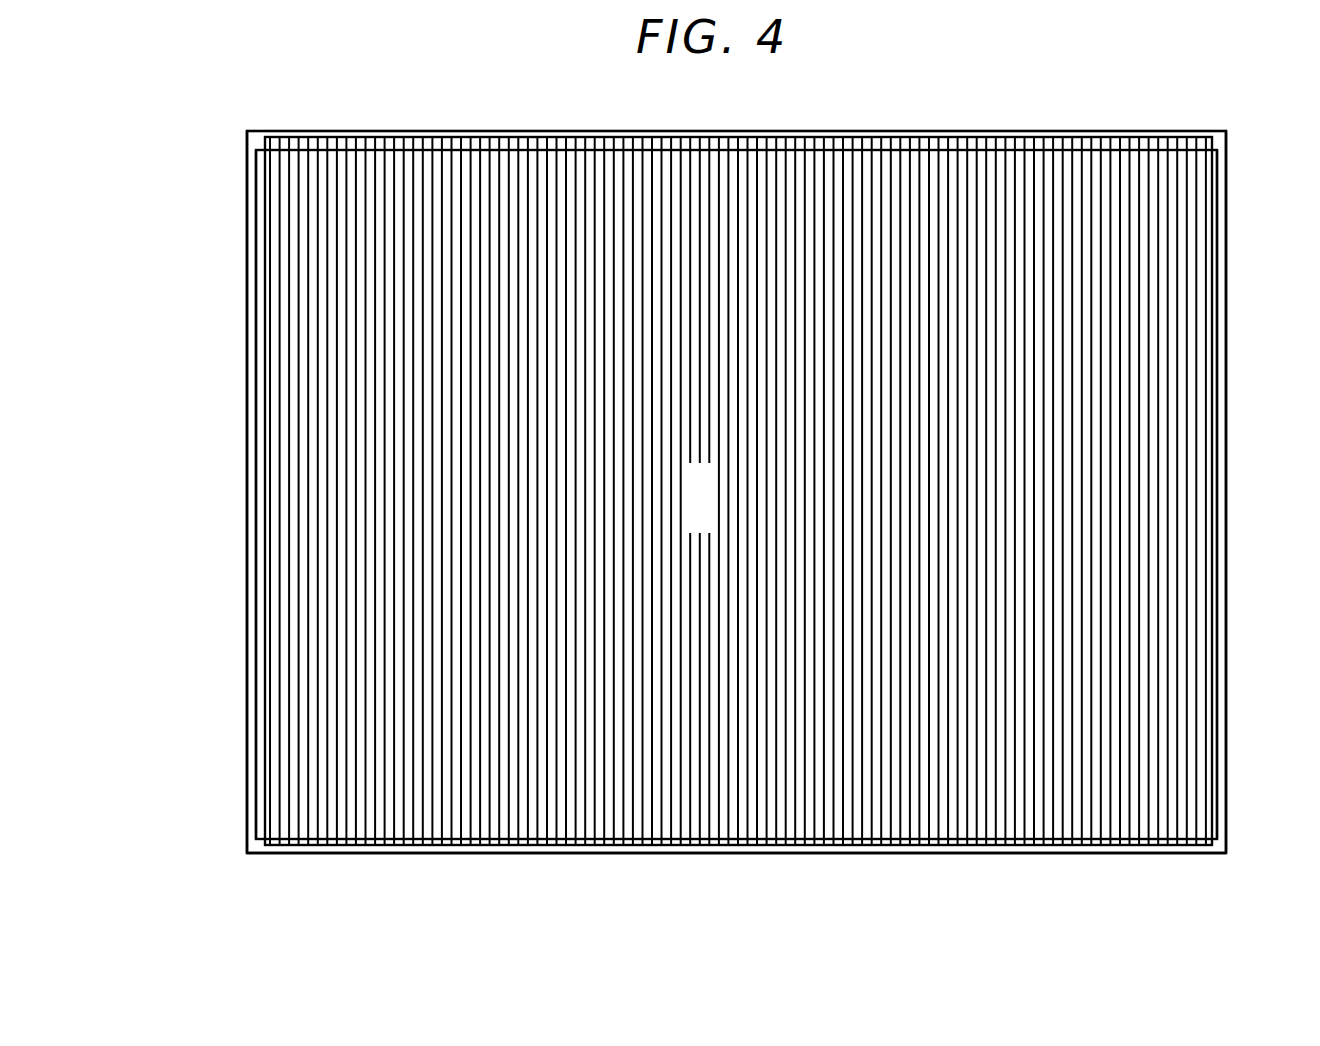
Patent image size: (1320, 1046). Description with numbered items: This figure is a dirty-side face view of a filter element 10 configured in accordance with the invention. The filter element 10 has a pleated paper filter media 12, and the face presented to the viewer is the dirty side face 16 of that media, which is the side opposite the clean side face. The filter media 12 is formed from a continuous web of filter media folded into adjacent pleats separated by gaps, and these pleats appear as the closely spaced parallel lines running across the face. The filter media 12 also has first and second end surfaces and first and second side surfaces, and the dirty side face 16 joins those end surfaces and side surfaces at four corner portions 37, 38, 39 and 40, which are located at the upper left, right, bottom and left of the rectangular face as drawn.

The filter element 10 is at (801, 130).
The pleated paper filter media 12 is at (677, 180).
The dirty side face 16 is at (712, 510).
The corner portion 37 is at (334, 137).
The corner portion 38 is at (1220, 555).
The corner portion 39 is at (636, 848).
The corner portion 40 is at (258, 602).